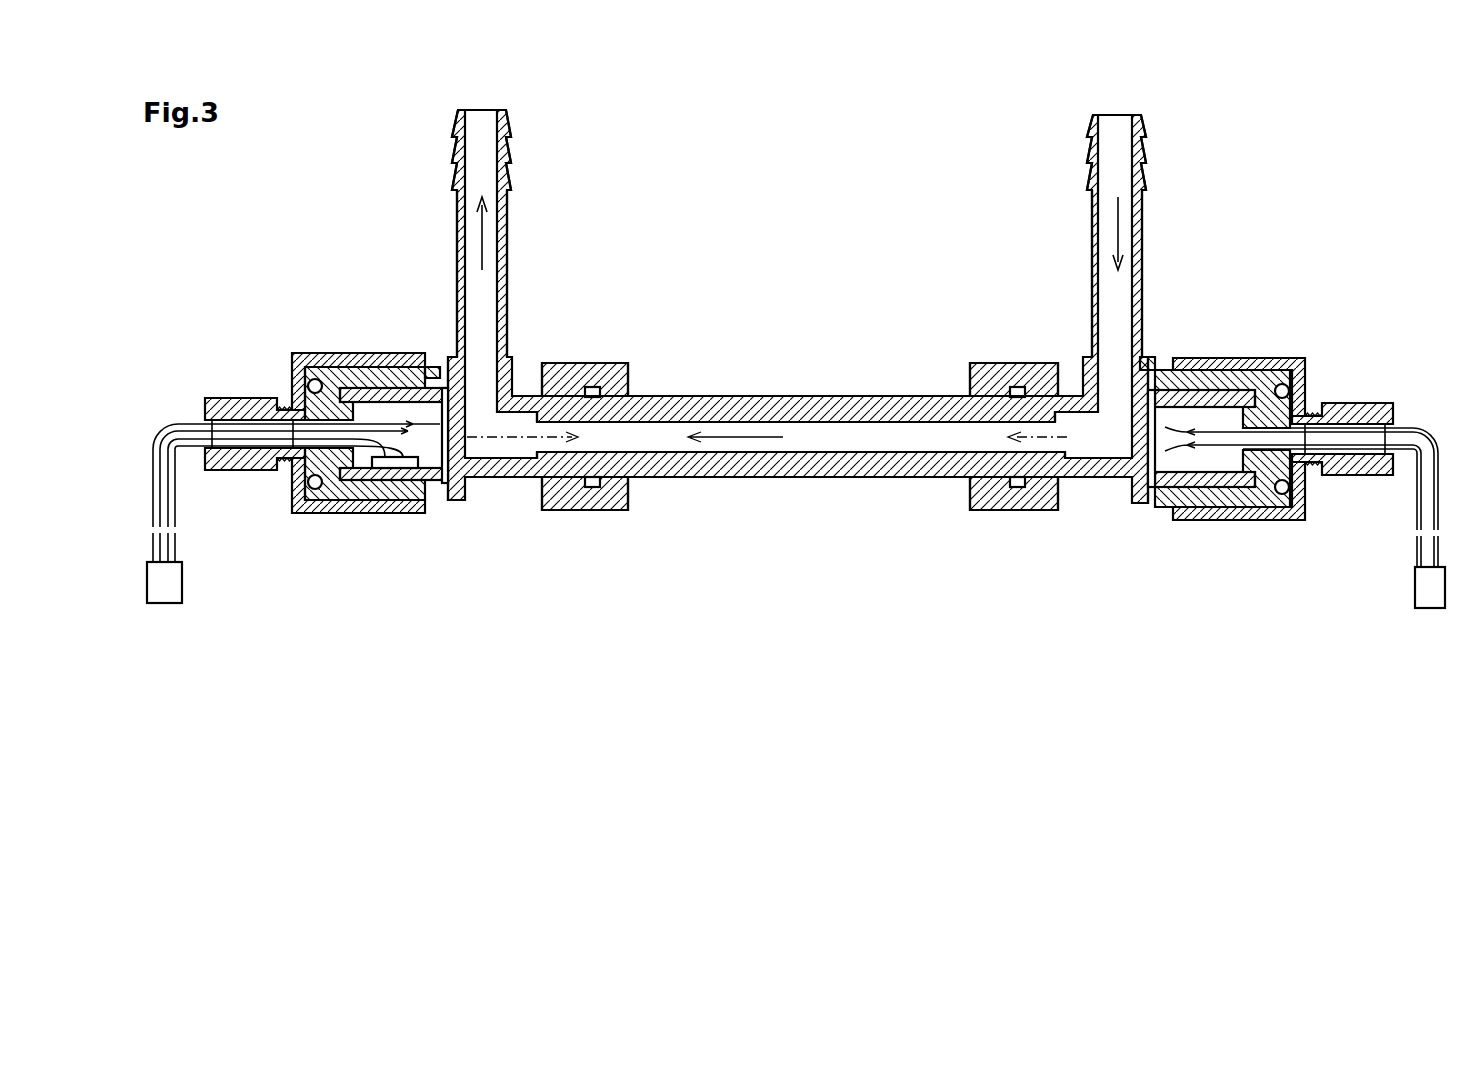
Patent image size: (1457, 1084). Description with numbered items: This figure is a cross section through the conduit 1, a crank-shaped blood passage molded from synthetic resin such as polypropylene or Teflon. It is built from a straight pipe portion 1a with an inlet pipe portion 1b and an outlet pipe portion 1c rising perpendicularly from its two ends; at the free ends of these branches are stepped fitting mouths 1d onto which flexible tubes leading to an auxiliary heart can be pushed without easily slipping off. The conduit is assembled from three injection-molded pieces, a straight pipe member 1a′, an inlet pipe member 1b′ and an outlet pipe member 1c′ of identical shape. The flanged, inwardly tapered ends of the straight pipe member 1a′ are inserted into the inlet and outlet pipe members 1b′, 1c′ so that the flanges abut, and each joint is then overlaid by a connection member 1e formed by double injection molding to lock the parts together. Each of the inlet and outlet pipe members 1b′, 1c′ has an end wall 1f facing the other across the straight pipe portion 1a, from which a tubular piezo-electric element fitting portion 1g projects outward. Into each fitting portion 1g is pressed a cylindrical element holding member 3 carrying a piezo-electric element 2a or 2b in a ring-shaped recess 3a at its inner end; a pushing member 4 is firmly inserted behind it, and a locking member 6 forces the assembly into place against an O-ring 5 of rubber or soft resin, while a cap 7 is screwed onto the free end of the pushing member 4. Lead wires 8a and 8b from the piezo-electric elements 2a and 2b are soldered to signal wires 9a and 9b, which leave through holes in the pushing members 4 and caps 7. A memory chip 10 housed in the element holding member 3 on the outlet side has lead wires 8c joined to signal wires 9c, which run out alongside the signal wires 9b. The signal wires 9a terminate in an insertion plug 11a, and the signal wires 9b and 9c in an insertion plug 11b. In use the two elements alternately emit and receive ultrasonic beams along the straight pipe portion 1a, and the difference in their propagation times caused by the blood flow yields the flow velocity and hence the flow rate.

The conduit 1 is at (876, 386).
The straight pipe portion 1a is at (773, 400).
The straight pipe member 1a′ is at (775, 470).
The inlet pipe portion 1b is at (1142, 227).
The inlet pipe member 1b′ is at (1147, 500).
The outlet pipe portion 1c is at (457, 268).
The outlet pipe member 1c′ is at (520, 478).
The fitting mouth 1d is at (458, 152).
The connection member 1e is at (602, 363).
The end wall 1f is at (492, 478).
The piezo-electric element fitting portion 1g is at (360, 513).
The piezo-electric element 2a is at (1182, 470).
The piezo-electric element 2b is at (410, 513).
The element holding member 3 is at (346, 353).
The ring-shaped recess 3a is at (438, 374).
The pushing member 4 is at (288, 467).
The O-ring 5 is at (292, 368).
The locking member 6 is at (295, 513).
The cap 7 is at (217, 398).
The lead wire 8a is at (1185, 395).
The lead wire 8b is at (395, 388).
The lead wire 8c is at (332, 513).
The signal wire 9a is at (1417, 433).
The signal wire 9b is at (166, 446).
The signal wire 9c is at (190, 457).
The memory chip 10 is at (382, 470).
The insertion plug 11a is at (1428, 593).
The insertion plug 11b is at (170, 590).